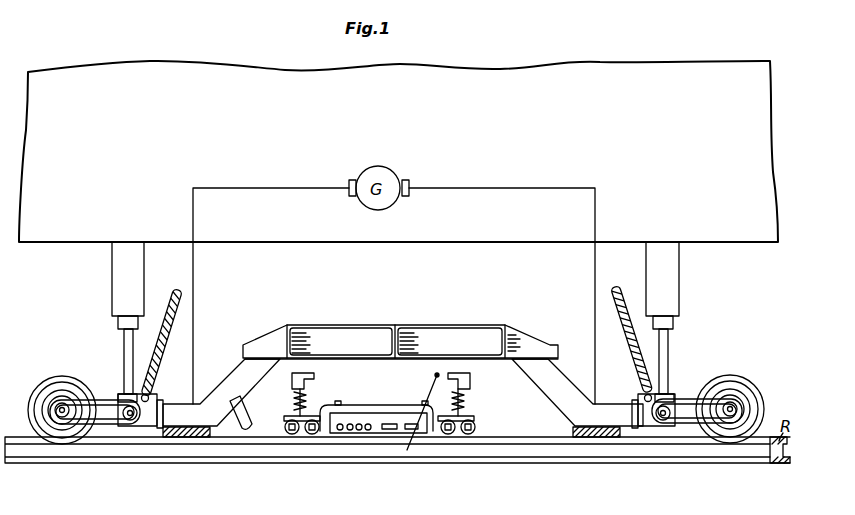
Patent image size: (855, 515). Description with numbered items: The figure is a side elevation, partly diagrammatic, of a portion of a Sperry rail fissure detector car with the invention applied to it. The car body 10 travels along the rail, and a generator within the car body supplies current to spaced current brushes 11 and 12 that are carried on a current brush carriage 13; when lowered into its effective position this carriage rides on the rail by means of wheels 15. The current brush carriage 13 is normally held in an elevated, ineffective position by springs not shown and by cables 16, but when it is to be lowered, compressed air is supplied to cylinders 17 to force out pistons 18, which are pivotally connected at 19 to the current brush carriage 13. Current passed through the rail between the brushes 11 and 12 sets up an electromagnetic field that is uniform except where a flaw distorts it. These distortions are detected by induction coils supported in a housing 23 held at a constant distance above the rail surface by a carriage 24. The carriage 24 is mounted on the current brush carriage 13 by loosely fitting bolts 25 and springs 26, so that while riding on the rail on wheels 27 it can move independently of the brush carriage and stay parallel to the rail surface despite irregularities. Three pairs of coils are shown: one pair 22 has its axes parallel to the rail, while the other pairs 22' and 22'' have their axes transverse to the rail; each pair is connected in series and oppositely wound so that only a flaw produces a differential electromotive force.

The car body 10 is at (670, 73).
The current brush 11 is at (612, 438).
The current brush 12 is at (200, 438).
The current brush carriage 13 is at (480, 330).
The wheels 15 is at (48, 366).
The cables 16 is at (159, 357).
The cylinders 17 is at (111, 272).
The pistons 18 is at (123, 352).
The pivotal connection 19 is at (127, 426).
The pair of coils 22 is at (391, 459).
The pair of coils 22' is at (345, 459).
The pair of coils 22'' is at (311, 457).
The housing 23 is at (407, 450).
The carriage 24 is at (362, 405).
The loosely fitting bolts 25 is at (292, 381).
The springs 26 is at (296, 404).
The wheels 27 is at (285, 427).